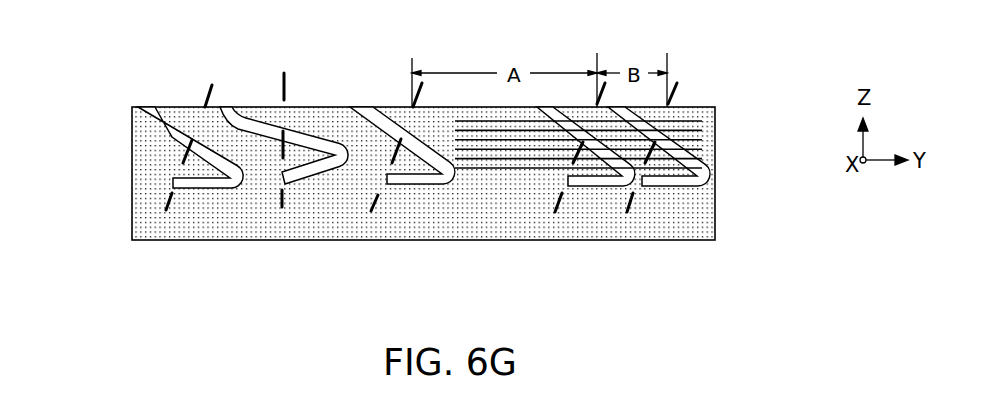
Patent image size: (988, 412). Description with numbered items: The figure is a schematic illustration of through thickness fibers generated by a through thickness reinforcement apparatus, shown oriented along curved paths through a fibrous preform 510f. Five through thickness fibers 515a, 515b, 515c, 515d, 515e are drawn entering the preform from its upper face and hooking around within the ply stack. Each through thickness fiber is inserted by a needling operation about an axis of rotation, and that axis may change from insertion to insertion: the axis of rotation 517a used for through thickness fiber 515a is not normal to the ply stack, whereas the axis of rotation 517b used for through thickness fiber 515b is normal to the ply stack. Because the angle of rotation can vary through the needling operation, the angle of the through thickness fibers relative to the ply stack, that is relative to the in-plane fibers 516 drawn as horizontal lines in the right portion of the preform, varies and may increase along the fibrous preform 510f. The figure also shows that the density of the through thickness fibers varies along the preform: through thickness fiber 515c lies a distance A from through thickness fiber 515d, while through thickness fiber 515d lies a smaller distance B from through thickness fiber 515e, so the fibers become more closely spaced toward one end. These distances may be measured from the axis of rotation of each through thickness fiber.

The fibrous preform 510f is at (133, 163).
The through thickness fiber 515a is at (215, 188).
The through thickness fiber 515b is at (302, 179).
The through thickness fiber 515c is at (418, 187).
The through thickness fiber 515d is at (598, 187).
The through thickness fiber 515e is at (678, 187).
The in-plane fibers 516 is at (693, 120).
The axis of rotation 517a is at (208, 90).
The axis of rotation 517b is at (285, 74).